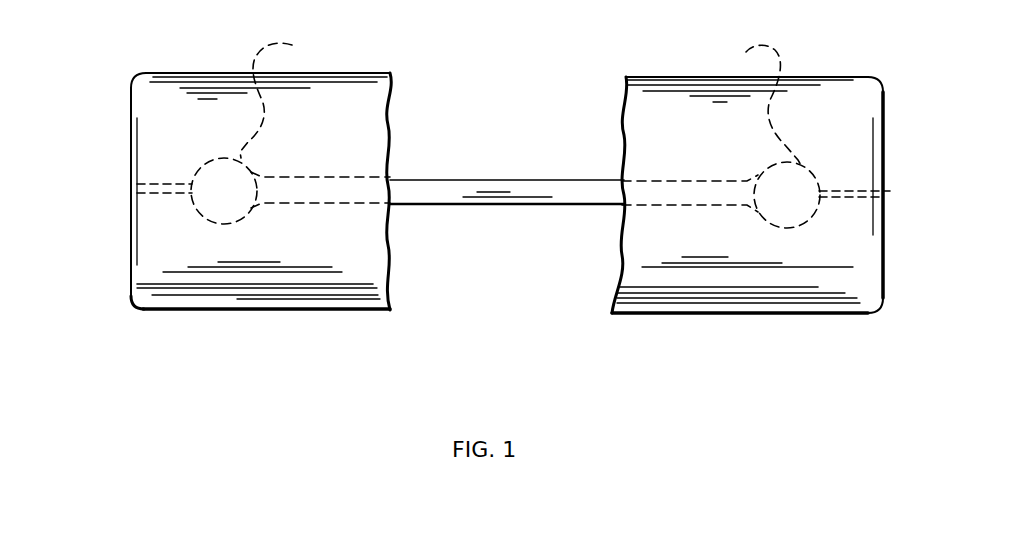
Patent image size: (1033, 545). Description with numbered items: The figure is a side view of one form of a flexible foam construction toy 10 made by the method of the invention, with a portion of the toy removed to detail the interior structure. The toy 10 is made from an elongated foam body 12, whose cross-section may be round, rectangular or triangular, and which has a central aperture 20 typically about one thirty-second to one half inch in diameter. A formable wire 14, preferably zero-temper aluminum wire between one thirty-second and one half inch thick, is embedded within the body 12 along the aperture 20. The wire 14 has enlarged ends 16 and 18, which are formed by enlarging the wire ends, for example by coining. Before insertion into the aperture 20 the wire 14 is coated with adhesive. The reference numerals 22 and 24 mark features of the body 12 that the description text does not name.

The flexible foam construction toy 10 is at (128, 78).
The elongated foam body 12 is at (326, 311).
The formable wire 14 is at (474, 187).
The enlarged end 16 is at (263, 129).
The enlarged end 18 is at (756, 133).
The central aperture 20 is at (888, 190).
The left end wall 22 is at (131, 175).
The bottom corner 24 is at (131, 305).